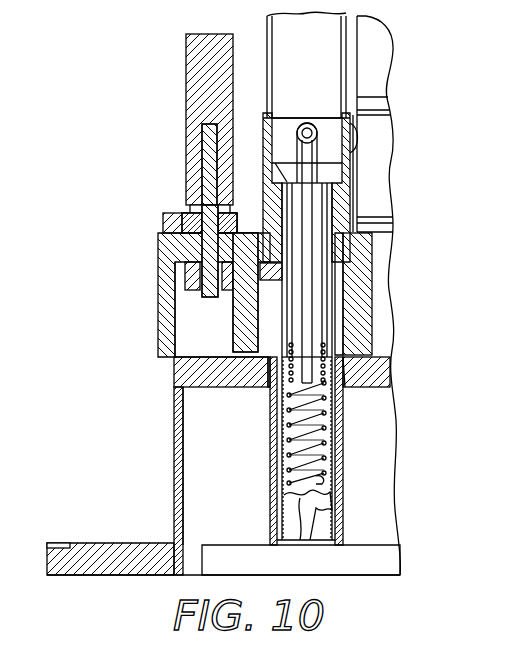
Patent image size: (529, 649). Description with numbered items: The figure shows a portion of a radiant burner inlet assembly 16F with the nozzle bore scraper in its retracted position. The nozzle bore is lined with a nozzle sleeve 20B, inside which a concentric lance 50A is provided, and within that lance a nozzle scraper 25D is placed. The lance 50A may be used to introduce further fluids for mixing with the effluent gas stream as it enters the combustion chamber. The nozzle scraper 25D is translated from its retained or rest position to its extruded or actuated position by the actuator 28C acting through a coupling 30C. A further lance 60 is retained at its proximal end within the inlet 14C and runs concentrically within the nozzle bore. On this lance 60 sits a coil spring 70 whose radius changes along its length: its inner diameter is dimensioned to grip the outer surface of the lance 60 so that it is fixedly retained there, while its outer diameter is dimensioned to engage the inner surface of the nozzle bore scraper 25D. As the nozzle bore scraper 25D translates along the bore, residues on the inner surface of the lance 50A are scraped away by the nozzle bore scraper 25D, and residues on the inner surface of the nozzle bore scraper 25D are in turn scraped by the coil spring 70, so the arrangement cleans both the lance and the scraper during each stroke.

The radiant burner inlet assembly 16F is at (132, 58).
The actuator 28C is at (186, 120).
The coupling 30C is at (192, 278).
The inlet 14C is at (306, 65).
The lance 60 is at (320, 317).
The coil spring 70 is at (303, 428).
The nozzle sleeve 20B is at (272, 497).
The lance 50A is at (337, 513).
The nozzle scraper 25D is at (310, 540).